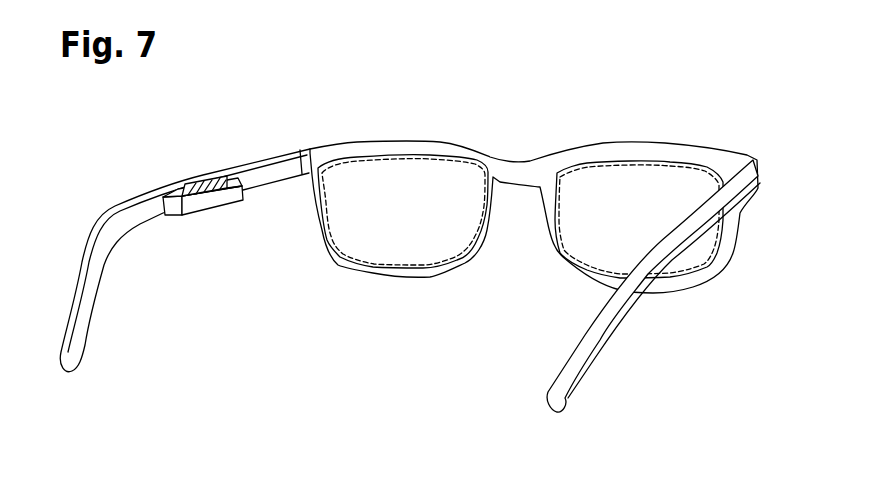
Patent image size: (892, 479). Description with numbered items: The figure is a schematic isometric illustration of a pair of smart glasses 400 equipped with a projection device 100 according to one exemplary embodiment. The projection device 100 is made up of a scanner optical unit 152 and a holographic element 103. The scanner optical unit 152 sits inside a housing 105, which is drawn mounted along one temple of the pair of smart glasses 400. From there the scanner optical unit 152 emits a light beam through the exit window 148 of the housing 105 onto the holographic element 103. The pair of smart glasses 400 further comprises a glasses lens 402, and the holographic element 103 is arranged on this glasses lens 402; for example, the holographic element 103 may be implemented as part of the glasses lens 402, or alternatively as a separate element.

The projection device 100 is at (410, 243).
The holographic element 103 is at (393, 279).
The housing 105 is at (205, 241).
The exit window 148 is at (235, 201).
The scanner optical unit 152 is at (198, 213).
The pair of smart glasses 400 is at (529, 212).
The glasses lens 402 is at (447, 157).